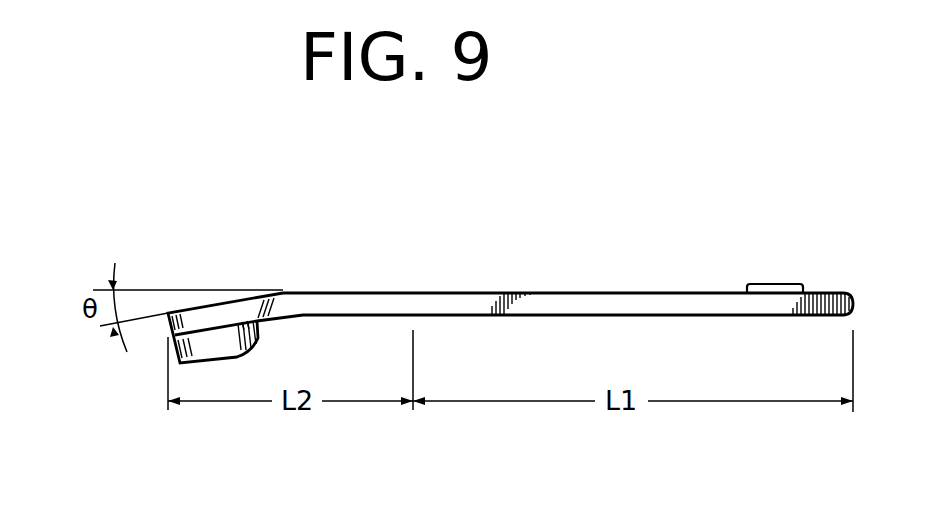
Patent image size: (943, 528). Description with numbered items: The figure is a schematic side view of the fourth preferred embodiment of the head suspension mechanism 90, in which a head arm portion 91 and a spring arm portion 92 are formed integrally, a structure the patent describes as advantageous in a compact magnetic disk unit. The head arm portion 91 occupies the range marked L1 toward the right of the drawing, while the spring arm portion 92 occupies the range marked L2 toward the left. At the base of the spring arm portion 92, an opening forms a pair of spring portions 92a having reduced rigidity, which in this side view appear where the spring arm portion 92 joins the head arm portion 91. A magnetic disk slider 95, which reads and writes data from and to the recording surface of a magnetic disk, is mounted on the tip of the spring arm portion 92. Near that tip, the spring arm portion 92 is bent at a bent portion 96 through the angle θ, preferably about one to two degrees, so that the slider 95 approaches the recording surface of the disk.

The head suspension mechanism 90 is at (488, 289).
The head arm portion 91 is at (615, 298).
The spring arm portion 92 is at (362, 297).
The spring portions 92a is at (412, 295).
The magnetic disk slider 95 is at (182, 363).
The bent portion 96 is at (291, 290).